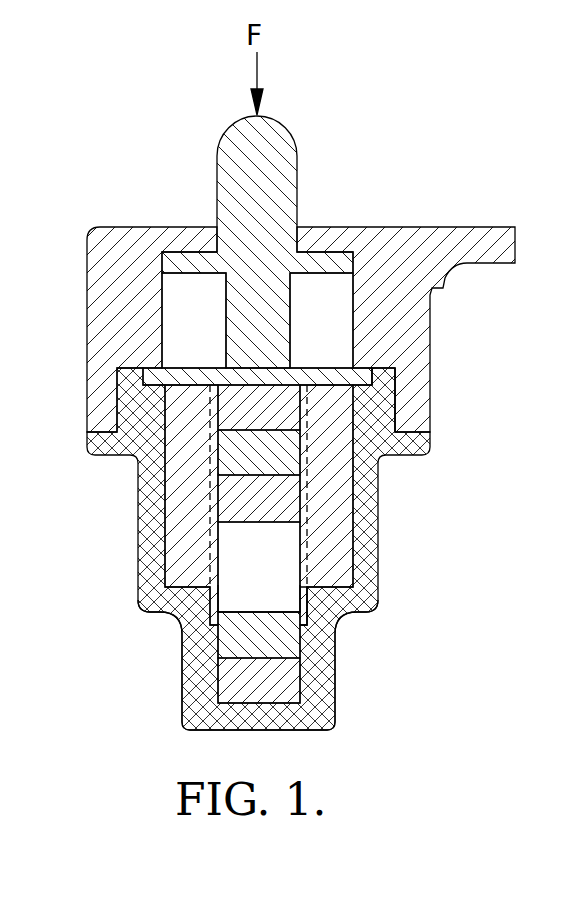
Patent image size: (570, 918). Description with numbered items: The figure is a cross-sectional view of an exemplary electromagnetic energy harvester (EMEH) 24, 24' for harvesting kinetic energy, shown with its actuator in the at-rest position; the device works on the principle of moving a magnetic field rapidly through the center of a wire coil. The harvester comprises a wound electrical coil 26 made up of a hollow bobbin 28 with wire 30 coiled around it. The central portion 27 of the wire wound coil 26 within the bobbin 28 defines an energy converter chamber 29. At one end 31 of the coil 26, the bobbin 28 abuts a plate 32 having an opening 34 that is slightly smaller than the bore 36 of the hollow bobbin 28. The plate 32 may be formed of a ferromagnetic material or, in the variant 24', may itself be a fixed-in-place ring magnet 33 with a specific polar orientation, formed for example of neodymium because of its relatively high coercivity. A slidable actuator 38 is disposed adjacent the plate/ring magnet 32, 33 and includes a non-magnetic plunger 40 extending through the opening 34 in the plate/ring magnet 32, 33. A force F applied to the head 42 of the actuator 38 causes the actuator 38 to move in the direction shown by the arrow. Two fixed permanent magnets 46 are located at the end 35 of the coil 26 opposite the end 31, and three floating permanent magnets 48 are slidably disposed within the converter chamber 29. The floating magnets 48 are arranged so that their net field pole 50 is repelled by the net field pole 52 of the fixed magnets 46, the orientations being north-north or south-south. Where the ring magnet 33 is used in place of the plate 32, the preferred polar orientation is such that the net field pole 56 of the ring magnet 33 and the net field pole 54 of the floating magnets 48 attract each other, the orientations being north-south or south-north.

The electromagnetic energy harvester 24 is at (286, 430).
The electromagnetic energy harvester 24' is at (286, 430).
The wound electrical coil 26 is at (300, 556).
The central portion 27 is at (113, 617).
The hollow bobbin 28 is at (298, 595).
The energy converter chamber 29 is at (145, 602).
The wire 30 is at (332, 483).
The end of coil 31 is at (195, 375).
The plate 32 is at (266, 329).
The ring magnet 33 is at (266, 329).
The opening 34 is at (287, 371).
The end of coil 35 is at (183, 632).
The bore 36 is at (305, 603).
The slidable actuator 38 is at (200, 322).
The non-magnetic plunger 40 is at (238, 323).
The head 42 is at (222, 175).
The fixed permanent magnets 46 is at (283, 675).
The floating permanent magnets 48 is at (233, 508).
The net field pole 50 is at (195, 572).
The net field pole 52 is at (259, 601).
The net field pole 54 is at (365, 372).
The net field pole 56 is at (183, 401).